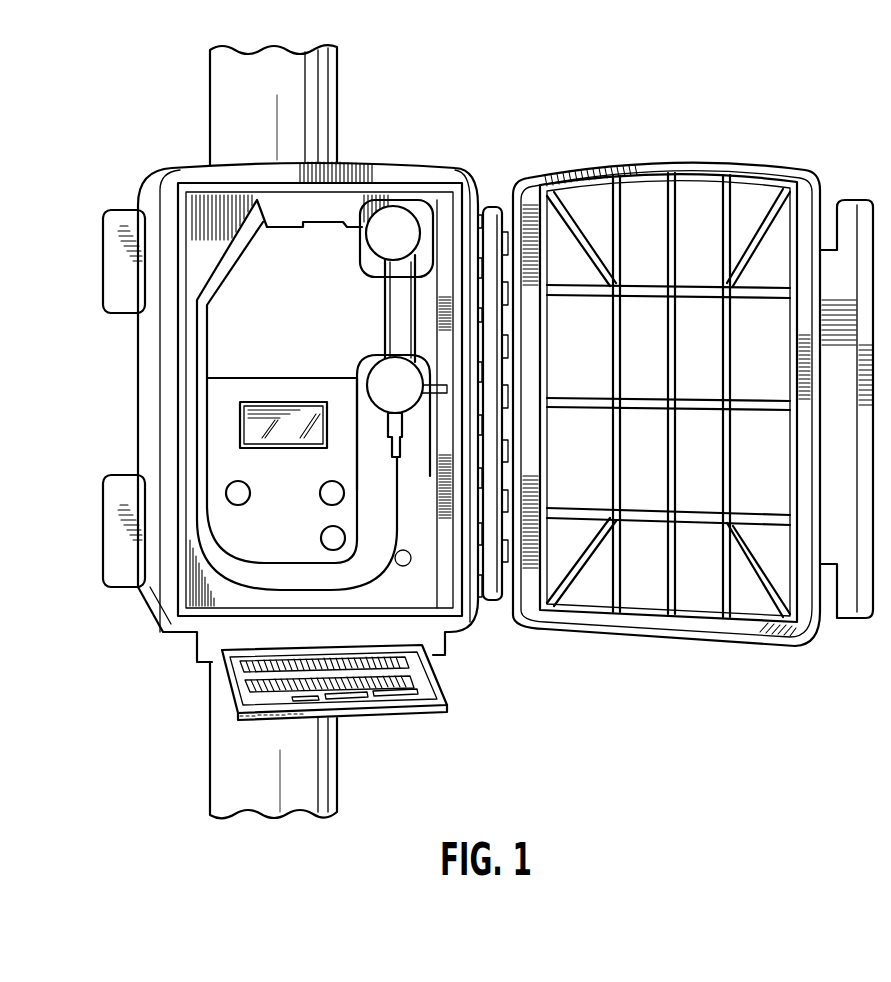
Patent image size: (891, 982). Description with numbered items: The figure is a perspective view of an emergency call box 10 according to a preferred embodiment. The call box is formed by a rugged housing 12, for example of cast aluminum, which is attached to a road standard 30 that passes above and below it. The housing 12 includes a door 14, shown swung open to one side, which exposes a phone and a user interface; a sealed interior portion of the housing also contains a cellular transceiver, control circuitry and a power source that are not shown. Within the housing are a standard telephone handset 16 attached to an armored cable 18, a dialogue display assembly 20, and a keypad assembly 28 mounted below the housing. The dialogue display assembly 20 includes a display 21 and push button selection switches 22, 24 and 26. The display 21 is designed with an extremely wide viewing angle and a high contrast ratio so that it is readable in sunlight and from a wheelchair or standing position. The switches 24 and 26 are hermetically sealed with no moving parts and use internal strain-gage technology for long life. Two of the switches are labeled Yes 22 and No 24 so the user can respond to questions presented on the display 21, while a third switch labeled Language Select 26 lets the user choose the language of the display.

The emergency call box 10 is at (163, 165).
The housing 12 is at (403, 172).
The door 14 is at (535, 170).
The telephone handset 16 is at (393, 218).
The armored cable 18 is at (230, 243).
The dialogue display assembly 20 is at (262, 378).
The display 21 is at (241, 409).
The push button selection switch 22 is at (226, 491).
The push button selection switch 24 is at (322, 499).
The push button selection switch 26 is at (345, 541).
The keypad assembly 28 is at (233, 708).
The road standard 30 is at (338, 768).